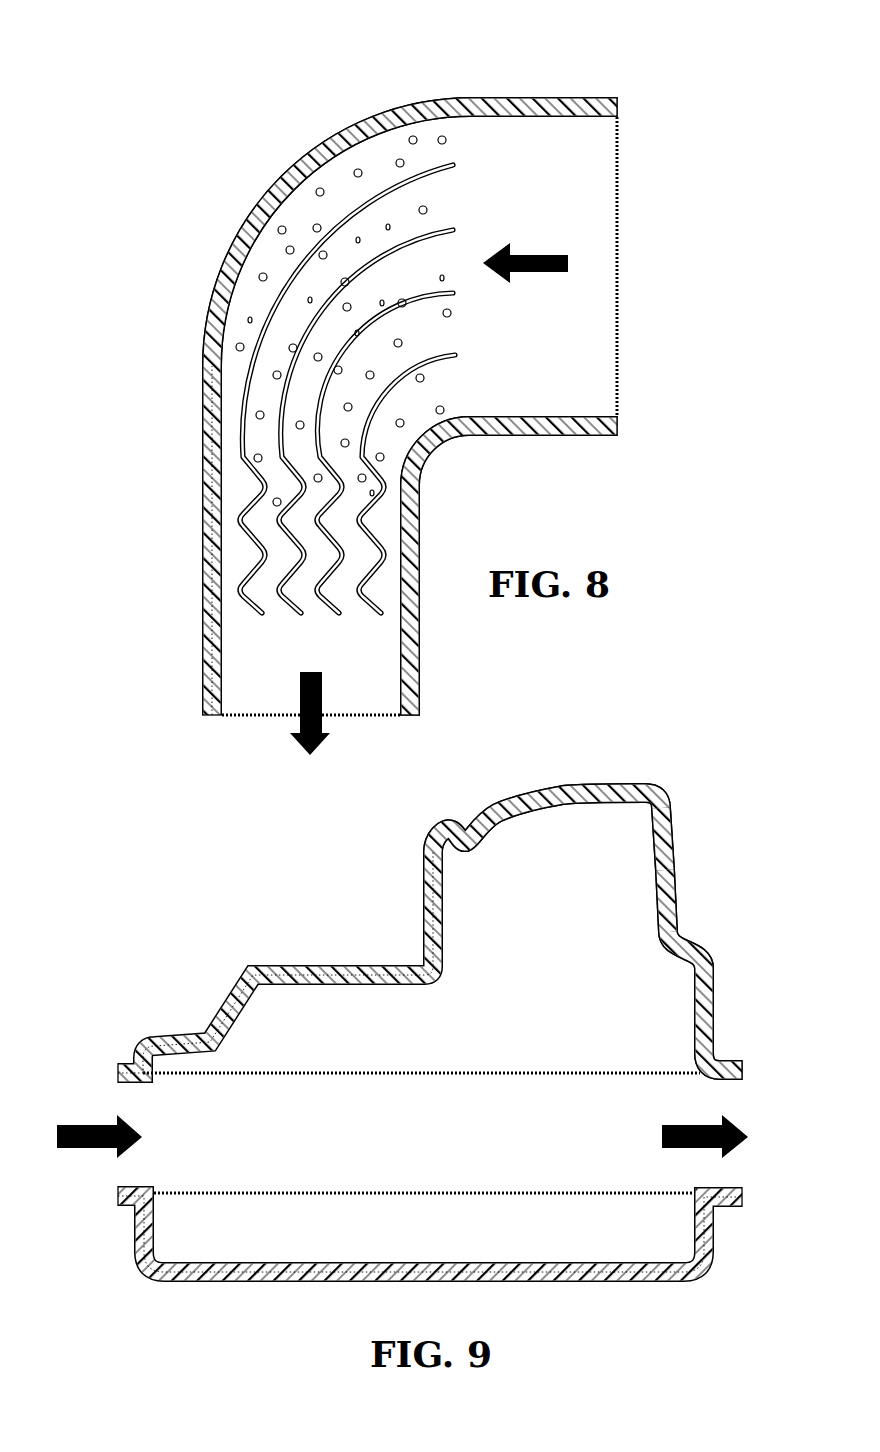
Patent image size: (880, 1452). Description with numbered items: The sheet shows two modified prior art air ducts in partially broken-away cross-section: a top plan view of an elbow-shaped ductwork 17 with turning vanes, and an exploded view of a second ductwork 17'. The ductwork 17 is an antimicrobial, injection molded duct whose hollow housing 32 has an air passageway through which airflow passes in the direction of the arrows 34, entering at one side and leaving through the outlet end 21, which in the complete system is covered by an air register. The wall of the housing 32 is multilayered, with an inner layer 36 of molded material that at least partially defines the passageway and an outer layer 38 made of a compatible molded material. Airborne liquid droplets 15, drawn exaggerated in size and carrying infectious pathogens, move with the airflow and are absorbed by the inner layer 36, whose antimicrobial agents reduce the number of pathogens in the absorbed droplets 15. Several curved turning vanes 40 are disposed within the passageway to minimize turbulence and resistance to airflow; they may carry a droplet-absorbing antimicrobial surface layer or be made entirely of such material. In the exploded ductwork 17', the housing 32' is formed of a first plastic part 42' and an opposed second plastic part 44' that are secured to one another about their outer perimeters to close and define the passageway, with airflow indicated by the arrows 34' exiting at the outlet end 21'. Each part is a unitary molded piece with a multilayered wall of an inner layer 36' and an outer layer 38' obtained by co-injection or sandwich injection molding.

In FIG. 8, the ductwork 17 is at (409, 358).
In FIG. 8, the airborne liquid droplets 15 is at (283, 226).
In FIG. 8, the outer layer 38 is at (416, 193).
In FIG. 8, the housing 32 is at (648, 75).
In FIG. 8, the inner layer 36 is at (536, 410).
In FIG. 8, the outlet end 21 is at (457, 600).
In FIG. 8, the turning vanes 40 is at (456, 230).
In FIG. 8, the arrows 34 is at (426, 485).
In FIG. 9, the ductwork 17' is at (430, 892).
In FIG. 9, the first plastic part 42' is at (585, 792).
In FIG. 9, the inner layer 36' is at (707, 839).
In FIG. 9, the outer layer 38' is at (719, 894).
In FIG. 9, the housing 32' is at (727, 944).
In FIG. 9, the outlet end 21' is at (754, 1030).
In FIG. 9, the second plastic part 44' is at (444, 1269).
In FIG. 9, the arrows 34' is at (385, 1123).